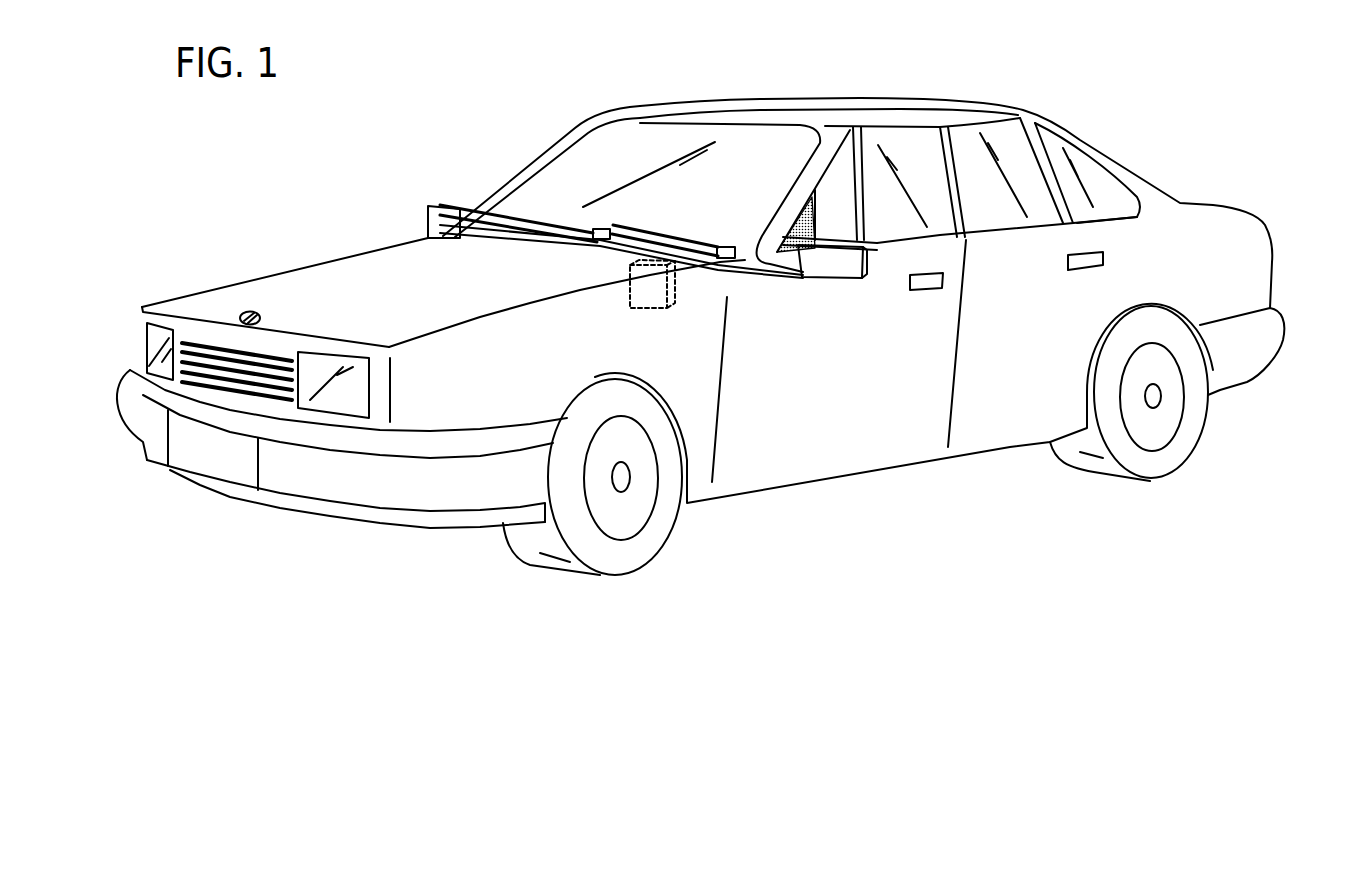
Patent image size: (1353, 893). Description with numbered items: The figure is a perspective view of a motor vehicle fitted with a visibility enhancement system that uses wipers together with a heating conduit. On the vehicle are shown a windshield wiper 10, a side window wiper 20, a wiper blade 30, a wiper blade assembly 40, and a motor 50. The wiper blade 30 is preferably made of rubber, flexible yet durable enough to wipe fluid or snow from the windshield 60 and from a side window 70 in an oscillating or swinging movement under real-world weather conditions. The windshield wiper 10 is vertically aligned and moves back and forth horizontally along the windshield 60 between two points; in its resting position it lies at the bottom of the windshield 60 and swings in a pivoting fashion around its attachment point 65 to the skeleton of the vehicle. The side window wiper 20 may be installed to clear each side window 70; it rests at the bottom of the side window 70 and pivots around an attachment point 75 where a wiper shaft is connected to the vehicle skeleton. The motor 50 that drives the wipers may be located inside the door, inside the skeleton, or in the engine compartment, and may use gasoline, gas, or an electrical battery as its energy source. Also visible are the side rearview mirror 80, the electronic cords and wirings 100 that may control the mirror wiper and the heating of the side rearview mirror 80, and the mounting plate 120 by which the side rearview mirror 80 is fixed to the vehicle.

The windshield wiper 10 is at (603, 407).
The side window wiper 20 is at (833, 235).
The wiper blade 30 is at (699, 246).
The wiper blade assembly 40 is at (685, 248).
The motor 50 is at (645, 308).
The windshield 60 is at (573, 155).
The attachment point 65 is at (603, 229).
The side window 70 is at (903, 167).
The attachment point 75 is at (798, 220).
The side rearview mirror 80 is at (843, 268).
The electronic cords and wirings 100 is at (783, 268).
The mounting plate 120 is at (792, 243).